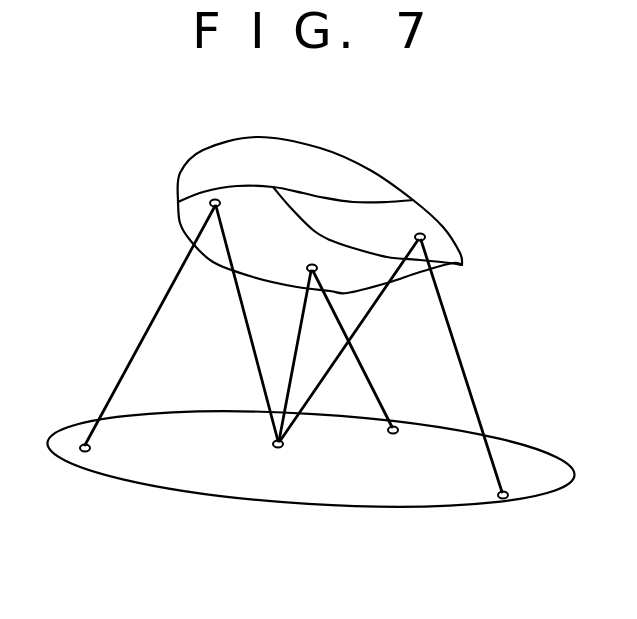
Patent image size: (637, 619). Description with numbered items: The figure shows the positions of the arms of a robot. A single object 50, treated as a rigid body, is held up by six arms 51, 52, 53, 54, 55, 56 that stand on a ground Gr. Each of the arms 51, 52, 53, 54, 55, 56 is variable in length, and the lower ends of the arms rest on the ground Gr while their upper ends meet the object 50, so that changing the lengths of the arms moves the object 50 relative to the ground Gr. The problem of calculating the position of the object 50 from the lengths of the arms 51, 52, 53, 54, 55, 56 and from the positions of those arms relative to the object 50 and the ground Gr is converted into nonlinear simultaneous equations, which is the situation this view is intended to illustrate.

The object 50 is at (377, 170).
The arm 51 is at (141, 341).
The arm 52 is at (249, 338).
The arm 53 is at (301, 323).
The arm 54 is at (359, 363).
The arm 55 is at (368, 313).
The arm 56 is at (450, 330).
The ground Gr is at (440, 505).